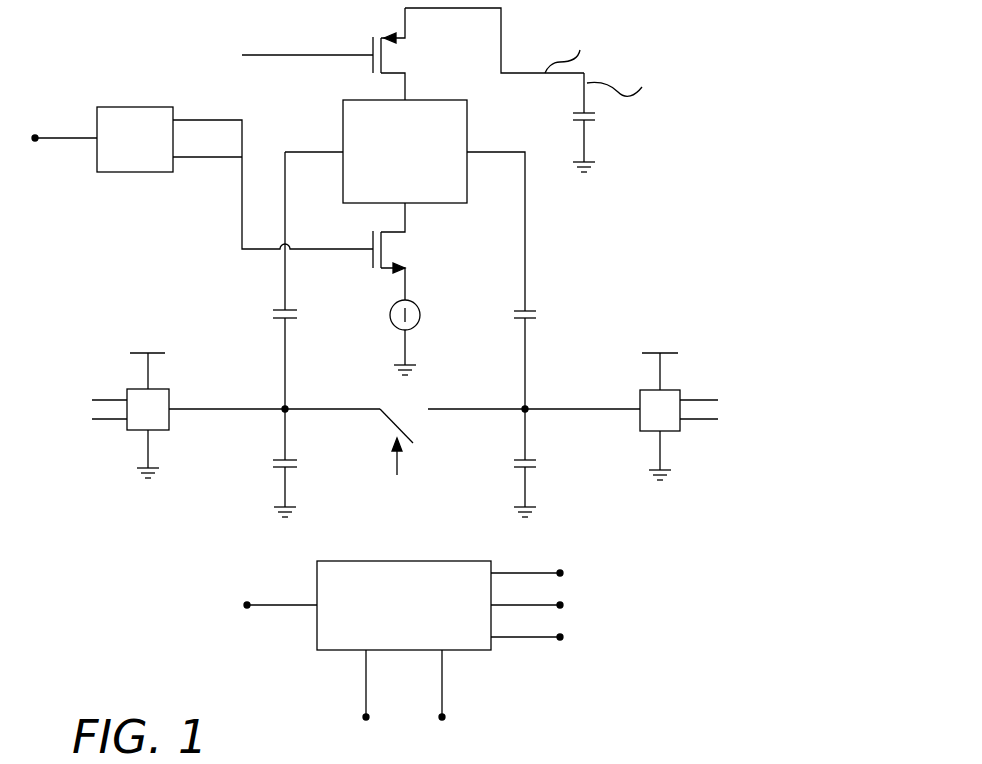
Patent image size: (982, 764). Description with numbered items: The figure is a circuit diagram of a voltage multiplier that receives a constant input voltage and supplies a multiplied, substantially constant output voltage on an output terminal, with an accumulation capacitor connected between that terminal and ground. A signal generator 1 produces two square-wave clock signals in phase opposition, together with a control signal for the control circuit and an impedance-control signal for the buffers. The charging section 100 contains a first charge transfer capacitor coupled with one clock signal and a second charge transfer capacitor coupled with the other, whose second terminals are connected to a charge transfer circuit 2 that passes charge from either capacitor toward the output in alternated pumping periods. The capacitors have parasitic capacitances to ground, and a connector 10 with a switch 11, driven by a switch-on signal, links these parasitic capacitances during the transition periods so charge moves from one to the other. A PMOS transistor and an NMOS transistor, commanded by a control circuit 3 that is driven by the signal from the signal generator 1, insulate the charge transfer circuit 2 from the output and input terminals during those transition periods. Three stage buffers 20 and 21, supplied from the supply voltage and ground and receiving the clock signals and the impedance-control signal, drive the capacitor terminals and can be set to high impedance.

The signal generator 1 is at (405, 561).
The charge transfer circuit 2 is at (467, 128).
The control circuit 3 is at (137, 107).
The connector 10 is at (370, 442).
The switch 11 is at (399, 424).
The three stage buffer 20 is at (168, 397).
The three stage buffer 21 is at (640, 398).
The charging section 100 is at (110, 227).